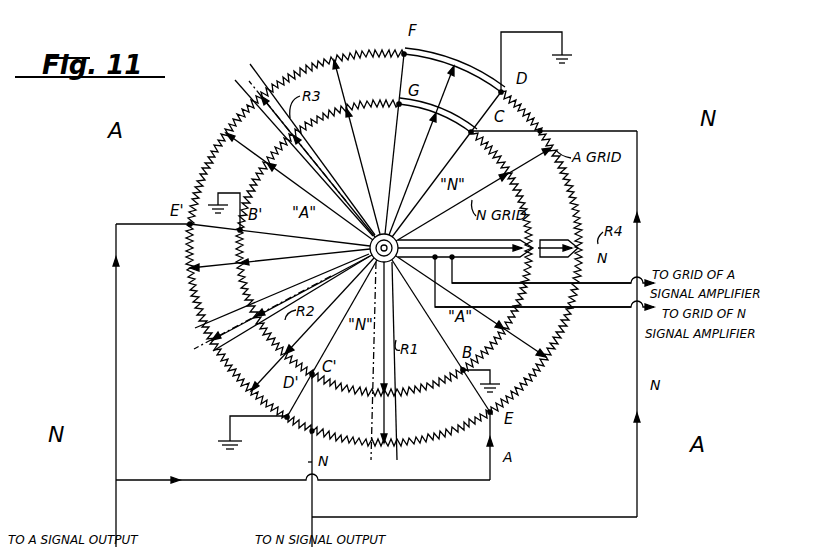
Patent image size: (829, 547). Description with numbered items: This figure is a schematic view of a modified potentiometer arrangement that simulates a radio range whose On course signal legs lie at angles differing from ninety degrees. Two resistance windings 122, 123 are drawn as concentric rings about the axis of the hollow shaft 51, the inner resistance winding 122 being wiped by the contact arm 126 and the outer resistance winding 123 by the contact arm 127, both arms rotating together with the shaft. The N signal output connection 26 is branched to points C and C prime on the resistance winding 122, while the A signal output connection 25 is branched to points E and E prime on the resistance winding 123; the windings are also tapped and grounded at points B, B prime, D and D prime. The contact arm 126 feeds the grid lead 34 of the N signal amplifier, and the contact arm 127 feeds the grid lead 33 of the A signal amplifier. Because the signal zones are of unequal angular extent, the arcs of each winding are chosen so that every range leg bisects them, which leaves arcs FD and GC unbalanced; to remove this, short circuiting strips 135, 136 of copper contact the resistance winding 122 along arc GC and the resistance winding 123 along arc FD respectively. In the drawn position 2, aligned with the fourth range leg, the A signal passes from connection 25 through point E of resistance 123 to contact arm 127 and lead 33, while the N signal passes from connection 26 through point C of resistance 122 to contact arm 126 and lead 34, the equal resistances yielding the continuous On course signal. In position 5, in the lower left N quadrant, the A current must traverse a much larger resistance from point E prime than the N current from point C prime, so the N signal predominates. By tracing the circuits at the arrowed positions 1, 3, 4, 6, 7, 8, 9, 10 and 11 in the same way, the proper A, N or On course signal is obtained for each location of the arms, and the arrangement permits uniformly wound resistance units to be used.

The contact arm position 1— 1 is at (526, 160).
The contact arm position 2— 2 is at (494, 257).
The contact arm position 3— 3 is at (490, 324).
The contact arm position 4— 4 is at (388, 368).
The contact arm position 5— 5 is at (346, 344).
The contact arm position 6— 6 is at (268, 312).
The contact arm position 7— 7 is at (268, 266).
The contact arm position 8— 8 is at (238, 136).
The contact arm position 9— 9 is at (272, 90).
The contact arm position 10— 10 is at (342, 64).
The contact arm position 11— 11 is at (450, 80).
The A signal output connection 25 is at (120, 360).
The N signal output connection 26 is at (314, 504).
The grid lead of A signal amplifier 33 is at (602, 282).
The grid lead of N signal amplifier 34 is at (588, 312).
The hollow shaft 51 is at (390, 280).
The resistance winding 122 is at (420, 392).
The resistance winding 123 is at (584, 215).
The contact arm 126 is at (414, 240).
The contact arm 127 is at (540, 240).
The short circuiting strip 135 is at (444, 116).
The short circuiting strip 136 is at (428, 50).